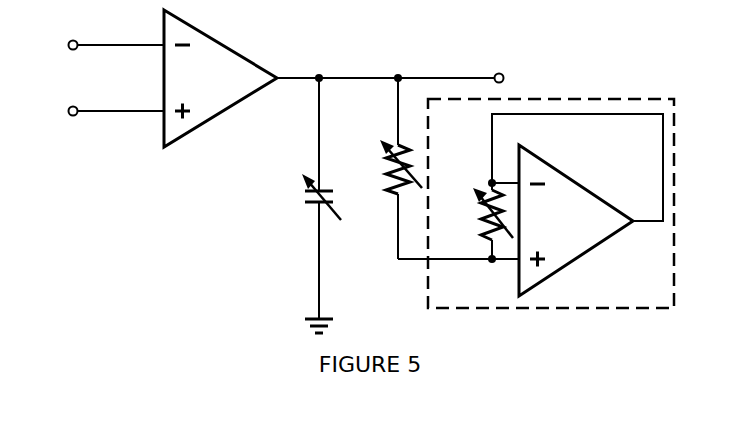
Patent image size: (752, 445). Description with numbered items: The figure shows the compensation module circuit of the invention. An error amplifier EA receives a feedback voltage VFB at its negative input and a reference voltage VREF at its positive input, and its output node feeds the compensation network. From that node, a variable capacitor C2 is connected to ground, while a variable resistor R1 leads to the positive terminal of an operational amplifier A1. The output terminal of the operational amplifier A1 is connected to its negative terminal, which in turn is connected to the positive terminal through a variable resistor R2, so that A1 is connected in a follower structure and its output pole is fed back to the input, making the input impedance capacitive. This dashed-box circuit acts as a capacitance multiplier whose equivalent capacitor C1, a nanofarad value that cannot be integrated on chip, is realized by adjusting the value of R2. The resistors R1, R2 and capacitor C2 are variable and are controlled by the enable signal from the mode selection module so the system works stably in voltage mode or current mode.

The error amplifier EA is at (220, 78).
The feedback voltage input VFB is at (117, 34).
The reference voltage input VREF is at (117, 99).
The variable capacitor C2 is at (308, 205).
The variable resistor R1 is at (434, 168).
The variable resistor R2 is at (480, 221).
The operational amplifier A1 is at (577, 205).
The equivalent capacitor C1 is at (551, 203).